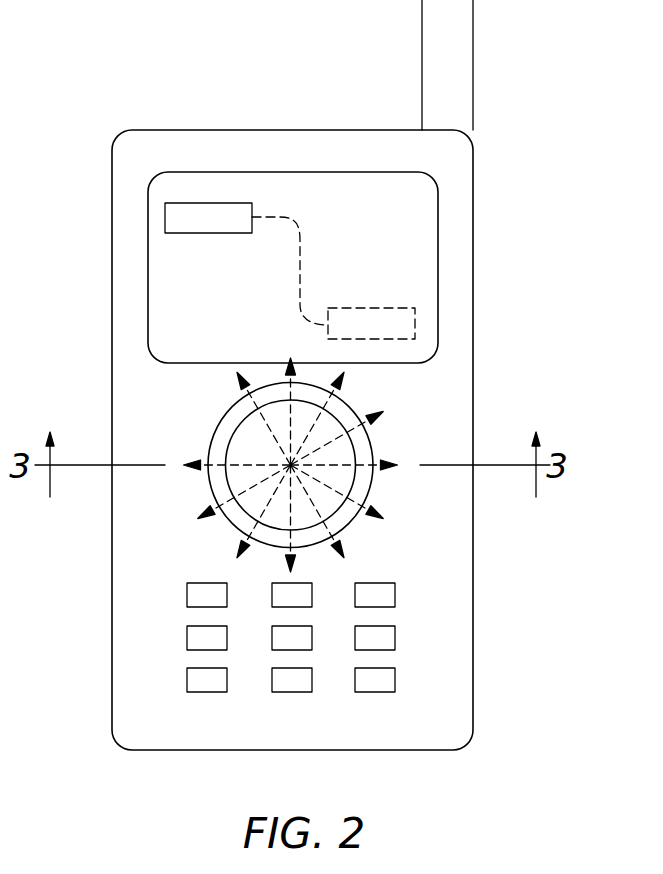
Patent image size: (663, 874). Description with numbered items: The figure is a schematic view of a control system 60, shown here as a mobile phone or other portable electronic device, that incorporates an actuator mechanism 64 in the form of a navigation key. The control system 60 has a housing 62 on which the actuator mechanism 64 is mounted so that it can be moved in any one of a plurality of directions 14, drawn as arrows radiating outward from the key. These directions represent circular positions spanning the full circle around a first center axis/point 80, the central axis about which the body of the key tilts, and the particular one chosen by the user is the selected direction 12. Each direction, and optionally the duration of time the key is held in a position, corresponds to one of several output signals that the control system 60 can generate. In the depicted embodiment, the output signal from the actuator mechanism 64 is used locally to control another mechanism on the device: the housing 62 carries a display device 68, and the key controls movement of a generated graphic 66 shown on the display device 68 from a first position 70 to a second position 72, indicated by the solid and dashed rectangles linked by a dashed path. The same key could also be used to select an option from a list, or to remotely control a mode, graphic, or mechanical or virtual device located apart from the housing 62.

The selected direction 12 is at (290, 465).
The plurality of directions 14 is at (372, 421).
The control system 60 is at (122, 66).
The housing 62 is at (120, 430).
The actuator mechanism 64 is at (186, 496).
The generated graphic 66 is at (190, 190).
The display device 68 is at (424, 219).
The first position 70 is at (415, 325).
The second position 72 is at (165, 213).
The first center axis/point 80 is at (290, 465).